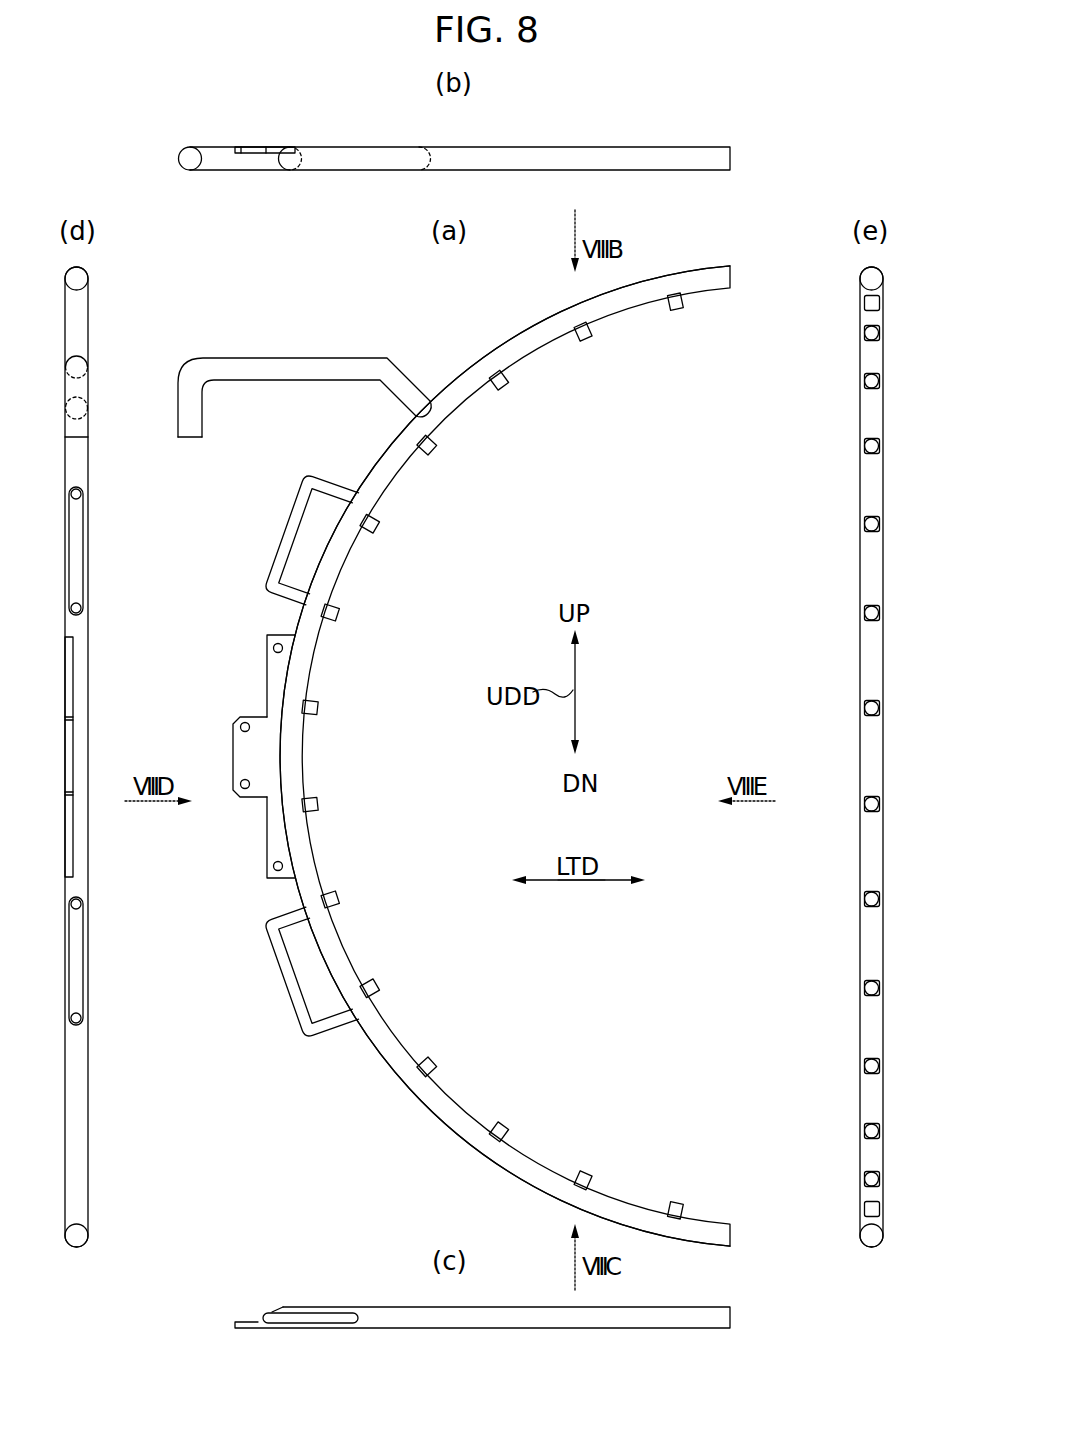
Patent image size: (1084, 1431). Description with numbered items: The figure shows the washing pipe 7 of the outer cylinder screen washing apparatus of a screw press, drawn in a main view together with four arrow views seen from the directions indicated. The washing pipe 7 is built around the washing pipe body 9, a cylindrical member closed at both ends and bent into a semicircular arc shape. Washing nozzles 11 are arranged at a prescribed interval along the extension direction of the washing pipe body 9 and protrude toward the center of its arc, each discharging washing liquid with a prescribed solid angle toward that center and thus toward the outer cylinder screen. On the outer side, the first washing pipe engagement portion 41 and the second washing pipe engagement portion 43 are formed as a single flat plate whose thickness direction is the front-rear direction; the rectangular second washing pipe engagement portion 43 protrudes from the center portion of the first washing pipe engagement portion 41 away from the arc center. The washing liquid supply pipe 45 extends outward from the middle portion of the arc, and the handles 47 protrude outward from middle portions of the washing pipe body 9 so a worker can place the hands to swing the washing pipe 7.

The washing pipe 7 is at (452, 383).
The washing pipe body 9 is at (520, 340).
The washing nozzles 11 is at (589, 345).
The first washing pipe engagement portion 41 is at (265, 650).
The second washing pipe engagement portion 43 is at (232, 740).
The washing liquid supply pipe 45 is at (352, 160).
The handles 47 is at (292, 511).